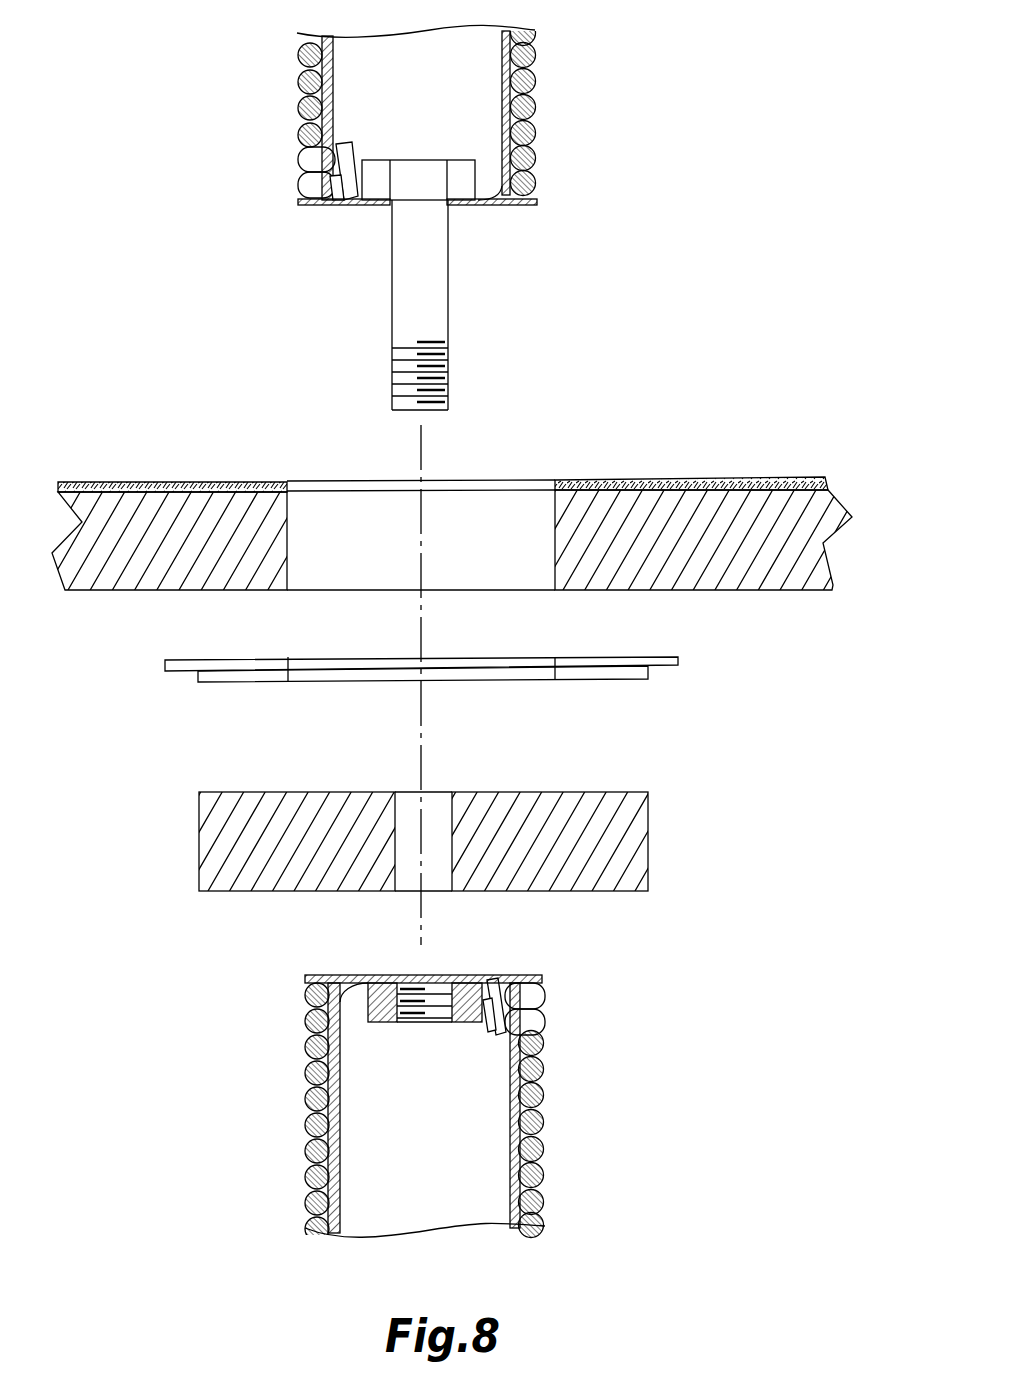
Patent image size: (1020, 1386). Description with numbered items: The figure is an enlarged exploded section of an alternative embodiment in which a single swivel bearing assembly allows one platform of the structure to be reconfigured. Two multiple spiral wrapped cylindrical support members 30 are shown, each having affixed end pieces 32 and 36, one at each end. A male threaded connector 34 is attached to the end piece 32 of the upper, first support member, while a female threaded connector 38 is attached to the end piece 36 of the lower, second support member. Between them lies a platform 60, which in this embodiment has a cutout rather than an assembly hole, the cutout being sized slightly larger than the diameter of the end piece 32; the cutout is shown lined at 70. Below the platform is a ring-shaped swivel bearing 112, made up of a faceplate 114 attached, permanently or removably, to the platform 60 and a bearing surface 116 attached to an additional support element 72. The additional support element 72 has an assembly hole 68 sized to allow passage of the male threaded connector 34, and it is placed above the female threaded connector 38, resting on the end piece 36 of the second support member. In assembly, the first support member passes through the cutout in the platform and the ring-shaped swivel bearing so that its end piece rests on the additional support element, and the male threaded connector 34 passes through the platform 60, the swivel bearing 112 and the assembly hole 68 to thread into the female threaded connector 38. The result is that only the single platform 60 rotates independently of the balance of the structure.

The support member 30 is at (580, 61).
The end piece 32 is at (537, 201).
The male threaded connector 34 is at (442, 248).
The end piece 36 is at (542, 978).
The female threaded connector 38 is at (407, 990).
The platform 60 is at (830, 490).
The assembly hole 68 is at (433, 792).
The opening liner in plate 70 is at (523, 493).
The additional support element 72 is at (650, 812).
The swivel bearing 112 is at (445, 689).
The faceplate 114 is at (680, 662).
The bearing surface 116 is at (198, 677).